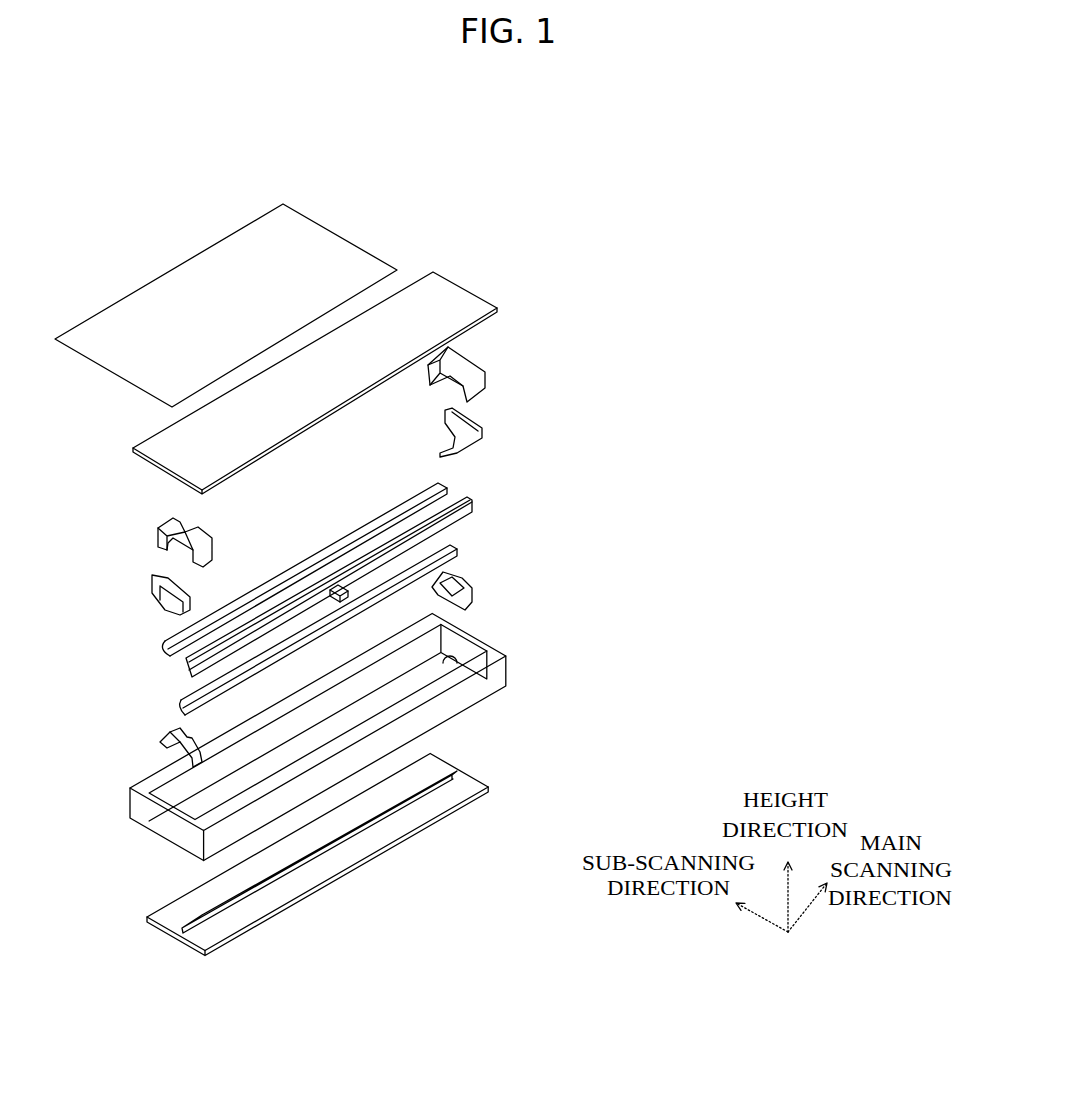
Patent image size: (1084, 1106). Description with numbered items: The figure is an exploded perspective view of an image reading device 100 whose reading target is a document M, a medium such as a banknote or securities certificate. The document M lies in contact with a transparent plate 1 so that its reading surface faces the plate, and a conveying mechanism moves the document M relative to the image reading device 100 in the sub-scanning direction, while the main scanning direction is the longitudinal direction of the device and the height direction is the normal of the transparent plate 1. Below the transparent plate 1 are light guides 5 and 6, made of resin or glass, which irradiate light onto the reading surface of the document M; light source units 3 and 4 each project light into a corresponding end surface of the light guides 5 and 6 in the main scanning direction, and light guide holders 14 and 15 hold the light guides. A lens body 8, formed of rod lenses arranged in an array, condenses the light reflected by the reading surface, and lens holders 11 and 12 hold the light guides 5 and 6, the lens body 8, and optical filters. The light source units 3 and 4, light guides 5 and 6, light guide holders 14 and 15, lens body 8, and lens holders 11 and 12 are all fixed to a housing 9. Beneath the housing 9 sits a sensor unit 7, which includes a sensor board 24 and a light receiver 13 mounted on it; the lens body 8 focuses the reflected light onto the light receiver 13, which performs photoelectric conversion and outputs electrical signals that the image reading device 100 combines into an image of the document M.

The image reading device 100 is at (497, 198).
The document M is at (330, 280).
The transparent plate 1 is at (497, 307).
The light guide holder 14 is at (488, 384).
The light source unit 3 is at (488, 410).
The light guide holder 15 is at (170, 523).
The light source unit 4 is at (150, 570).
The light guide 5 is at (472, 503).
The light guide 6 is at (164, 643).
The lens body 8 is at (455, 552).
The lens holder 11 is at (468, 591).
The housing 9 is at (502, 667).
The lens holder 12 is at (165, 742).
The sensor unit 7 is at (325, 850).
The light receiver 13 is at (202, 917).
The sensor board 24 is at (373, 840).